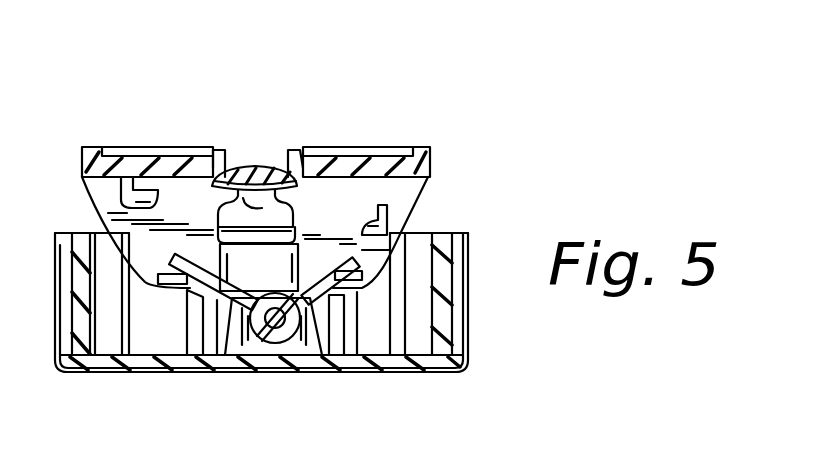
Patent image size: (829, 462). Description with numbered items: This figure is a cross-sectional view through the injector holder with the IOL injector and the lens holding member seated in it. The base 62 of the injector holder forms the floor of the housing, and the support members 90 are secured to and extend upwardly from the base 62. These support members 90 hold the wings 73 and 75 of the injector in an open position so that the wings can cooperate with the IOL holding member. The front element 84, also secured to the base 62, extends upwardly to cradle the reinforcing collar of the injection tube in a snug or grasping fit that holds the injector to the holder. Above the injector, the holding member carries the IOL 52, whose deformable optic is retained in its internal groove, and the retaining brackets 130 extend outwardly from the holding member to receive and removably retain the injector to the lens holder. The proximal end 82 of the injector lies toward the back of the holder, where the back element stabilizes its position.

The proximal end 82 is at (256, 144).
The retaining bracket 130 is at (119, 174).
The IOL 52 is at (258, 164).
The wing 73 is at (183, 258).
The wing 75 is at (347, 258).
The front element 84 is at (304, 337).
The support member 90 is at (202, 334).
The base 62 is at (137, 362).